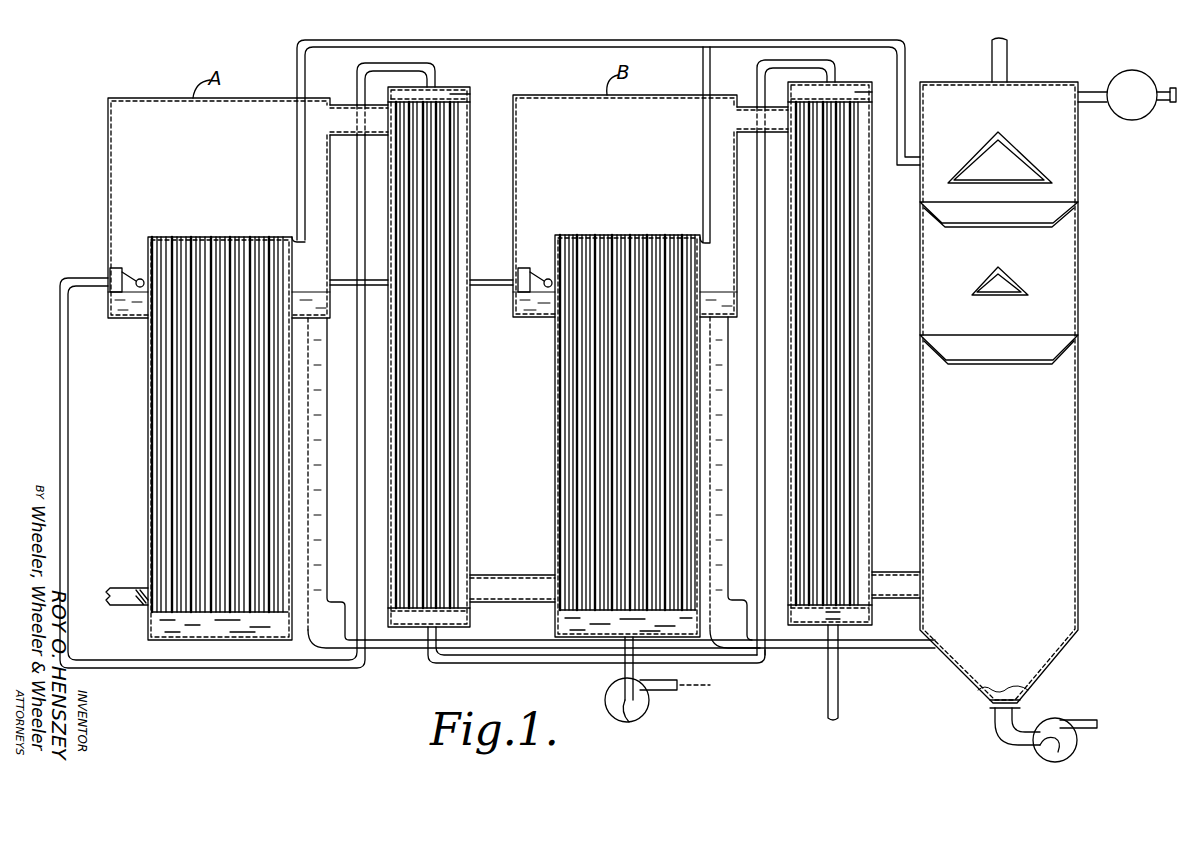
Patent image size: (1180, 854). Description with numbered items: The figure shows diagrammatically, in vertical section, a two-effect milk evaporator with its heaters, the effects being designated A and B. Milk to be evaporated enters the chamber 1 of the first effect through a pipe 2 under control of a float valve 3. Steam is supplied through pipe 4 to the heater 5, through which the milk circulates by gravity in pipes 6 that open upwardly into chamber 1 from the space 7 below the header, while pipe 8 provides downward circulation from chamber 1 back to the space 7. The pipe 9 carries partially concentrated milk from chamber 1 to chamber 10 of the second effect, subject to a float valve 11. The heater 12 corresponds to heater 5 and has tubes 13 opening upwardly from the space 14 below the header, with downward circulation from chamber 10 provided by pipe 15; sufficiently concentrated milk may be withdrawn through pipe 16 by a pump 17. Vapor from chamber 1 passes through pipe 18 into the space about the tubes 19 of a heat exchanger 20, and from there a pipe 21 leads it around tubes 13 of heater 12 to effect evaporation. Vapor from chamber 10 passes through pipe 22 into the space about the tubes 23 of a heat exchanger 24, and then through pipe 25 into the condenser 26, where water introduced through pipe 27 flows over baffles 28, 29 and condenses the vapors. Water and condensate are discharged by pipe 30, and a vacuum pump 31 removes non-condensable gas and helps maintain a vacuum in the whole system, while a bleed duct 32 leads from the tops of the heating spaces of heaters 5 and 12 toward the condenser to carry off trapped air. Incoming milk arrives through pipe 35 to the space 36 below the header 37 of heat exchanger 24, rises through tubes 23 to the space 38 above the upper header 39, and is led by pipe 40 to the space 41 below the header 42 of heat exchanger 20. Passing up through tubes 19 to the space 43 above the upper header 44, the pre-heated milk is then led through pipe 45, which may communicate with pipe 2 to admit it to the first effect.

The chamber 1 is at (130, 176).
The pipe 2 is at (84, 278).
The float valve 3 is at (118, 268).
The pipe 4 is at (112, 598).
The heater 5 is at (155, 483).
The pipes 6 is at (178, 427).
The space below the header 7 is at (160, 625).
The pipe 8 is at (330, 467).
The pipe 9 is at (496, 285).
The chamber 10 is at (542, 193).
The float valve 11 is at (526, 268).
The heater 12 is at (553, 437).
The tubes 13 is at (588, 476).
The space below the header 14 is at (565, 624).
The pipe 15 is at (735, 486).
The pipe 16 is at (625, 676).
The pump 17 is at (650, 700).
The pipe 18 is at (340, 108).
The tubes 19 is at (450, 185).
The heat exchanger 20 is at (472, 394).
The pipe 21 is at (508, 584).
The pipe 22 is at (748, 106).
The tubes 23 is at (840, 258).
The heat exchanger 24 is at (870, 346).
The pipe 25 is at (886, 582).
The condenser 26 is at (1062, 481).
The pipe 27 is at (1000, 67).
The baffles 28 is at (1022, 154).
The baffles 29 is at (1052, 212).
The pipe 30 is at (1020, 731).
The vacuum pump 31 is at (1145, 102).
The bleed duct 32 is at (770, 40).
The pipe 35 is at (838, 691).
The space below the header 36 is at (865, 616).
The header 37 is at (846, 615).
The space above the upper header 38 is at (848, 96).
The upper header 39 is at (870, 96).
The pipe 40 is at (760, 234).
The space below the header 41 is at (458, 619).
The header 42 is at (416, 629).
The space above the upper header 43 is at (458, 98).
The upper header 44 is at (445, 100).
The pipe 45 is at (360, 224).